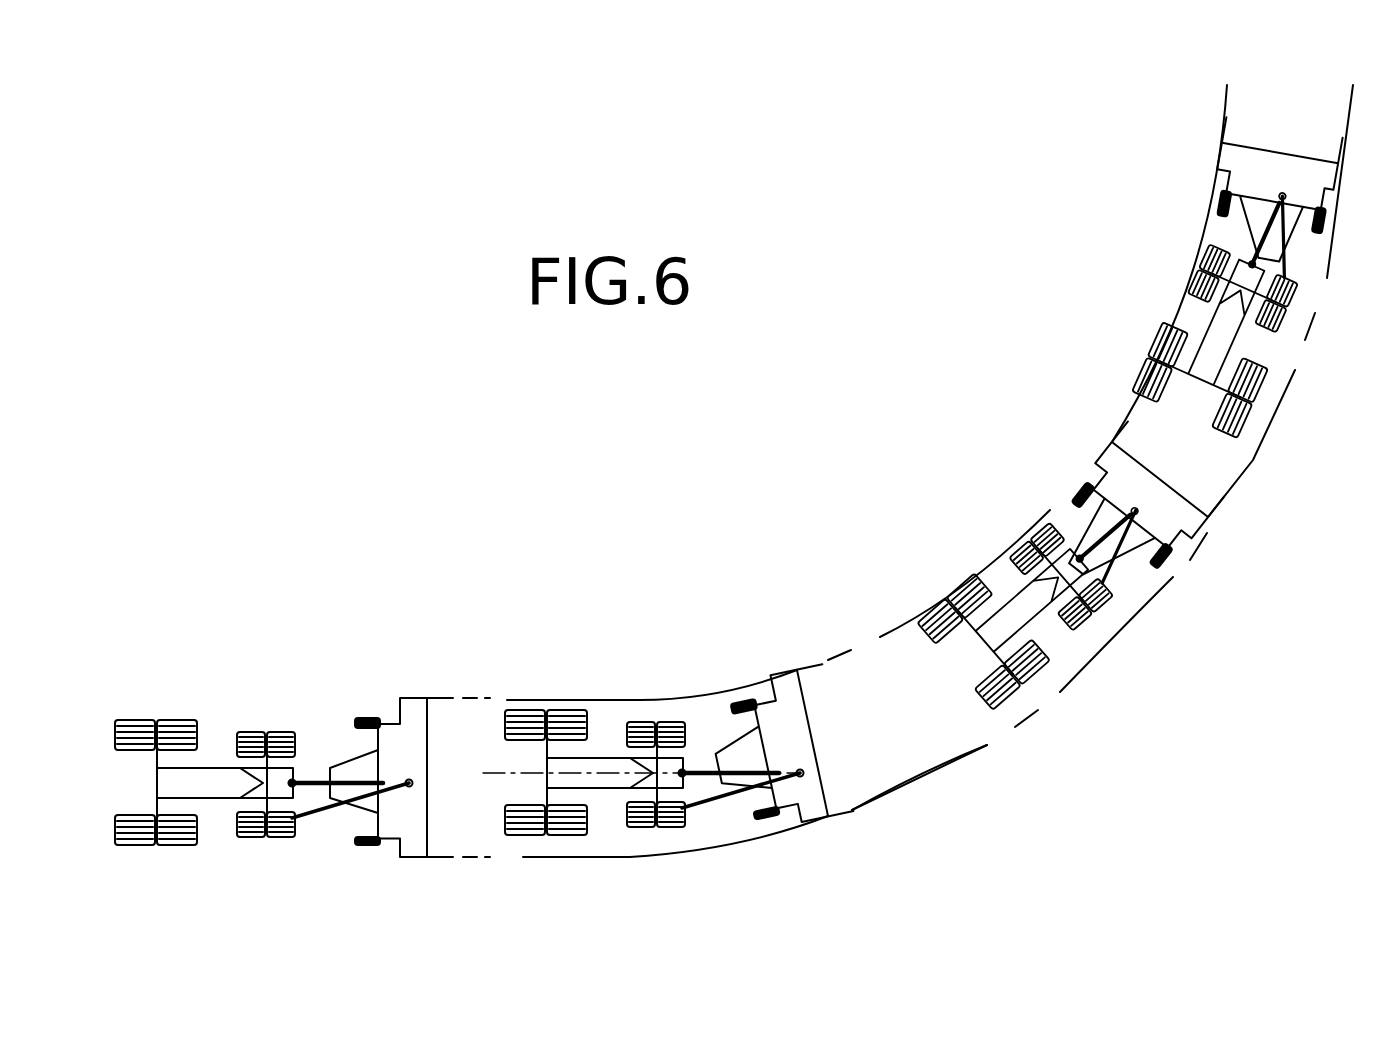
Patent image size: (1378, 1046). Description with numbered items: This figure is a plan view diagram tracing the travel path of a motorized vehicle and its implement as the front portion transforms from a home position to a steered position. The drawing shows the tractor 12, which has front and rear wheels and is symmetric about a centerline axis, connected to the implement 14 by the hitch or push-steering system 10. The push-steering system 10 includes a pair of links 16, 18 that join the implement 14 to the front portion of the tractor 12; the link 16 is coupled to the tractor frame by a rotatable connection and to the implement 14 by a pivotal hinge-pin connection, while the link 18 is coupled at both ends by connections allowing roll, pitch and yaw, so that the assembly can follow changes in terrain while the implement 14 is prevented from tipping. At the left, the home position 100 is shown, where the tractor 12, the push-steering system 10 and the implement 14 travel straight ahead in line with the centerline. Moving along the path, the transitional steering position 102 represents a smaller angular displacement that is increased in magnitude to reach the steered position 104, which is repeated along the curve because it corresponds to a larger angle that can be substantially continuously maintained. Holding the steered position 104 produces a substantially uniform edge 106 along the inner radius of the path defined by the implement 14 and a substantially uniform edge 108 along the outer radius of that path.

The push-steering system 10 is at (355, 678).
The tractor 12 is at (216, 779).
The implement 14 is at (398, 738).
The link 16 is at (307, 778).
The link 18 is at (318, 815).
The home position 100 is at (193, 590).
The transitional steering position 102 is at (557, 590).
The steered position 104 is at (1150, 226).
The uniform edge 106 is at (843, 651).
The uniform edge 108 is at (987, 745).